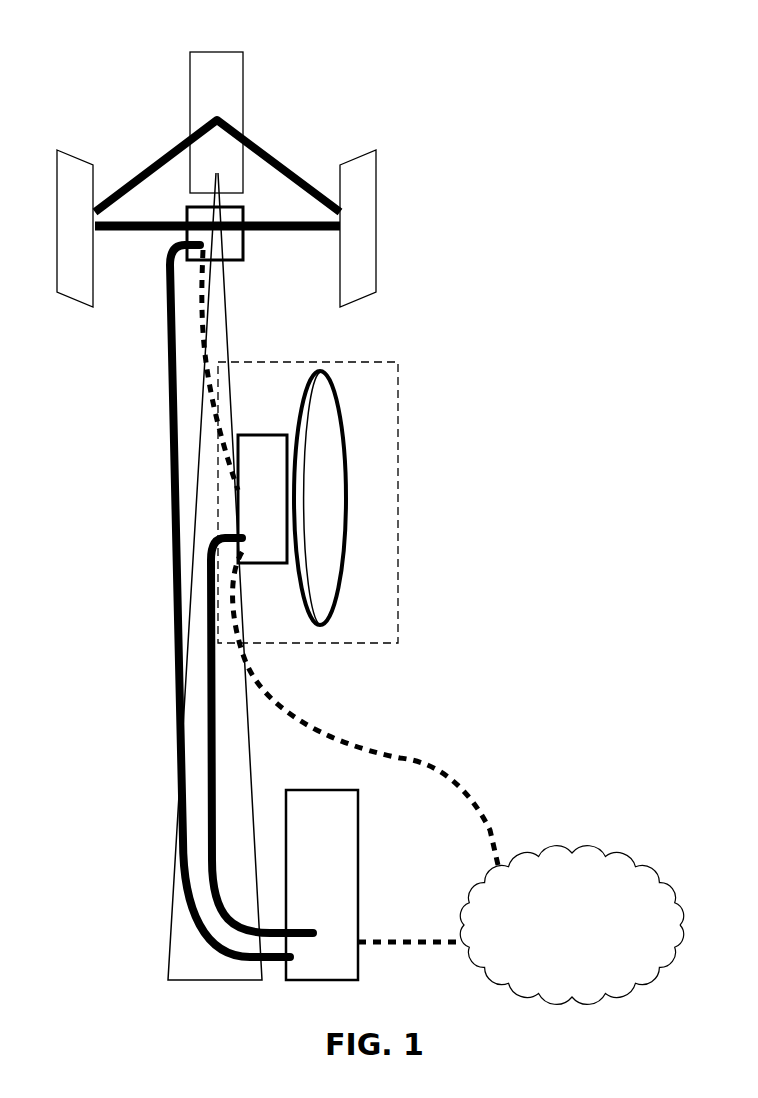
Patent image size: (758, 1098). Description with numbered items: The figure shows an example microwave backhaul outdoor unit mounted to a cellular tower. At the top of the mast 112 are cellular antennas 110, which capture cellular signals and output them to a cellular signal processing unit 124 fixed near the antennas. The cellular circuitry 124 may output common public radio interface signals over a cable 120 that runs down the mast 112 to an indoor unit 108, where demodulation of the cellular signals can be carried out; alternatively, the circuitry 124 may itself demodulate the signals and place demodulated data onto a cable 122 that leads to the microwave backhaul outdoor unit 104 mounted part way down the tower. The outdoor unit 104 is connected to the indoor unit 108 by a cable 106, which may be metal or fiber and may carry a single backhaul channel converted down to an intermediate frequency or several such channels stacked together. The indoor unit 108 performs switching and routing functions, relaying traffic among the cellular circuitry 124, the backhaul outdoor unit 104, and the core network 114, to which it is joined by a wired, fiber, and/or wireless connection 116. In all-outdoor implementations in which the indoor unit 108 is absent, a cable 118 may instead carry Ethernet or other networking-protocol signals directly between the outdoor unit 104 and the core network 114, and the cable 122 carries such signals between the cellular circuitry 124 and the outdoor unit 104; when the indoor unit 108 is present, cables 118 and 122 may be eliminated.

The microwave backhaul outdoor unit 104 is at (405, 355).
The cable 106 is at (203, 682).
The indoor unit 108 is at (322, 778).
The cellular antennas 110 is at (190, 52).
The mast 112 is at (172, 913).
The core network 114 is at (556, 951).
The connection 116 is at (412, 933).
The cable 118 is at (358, 735).
The cable 120 is at (170, 548).
The cable 122 is at (215, 427).
The cellular signal processing unit 124 is at (245, 210).